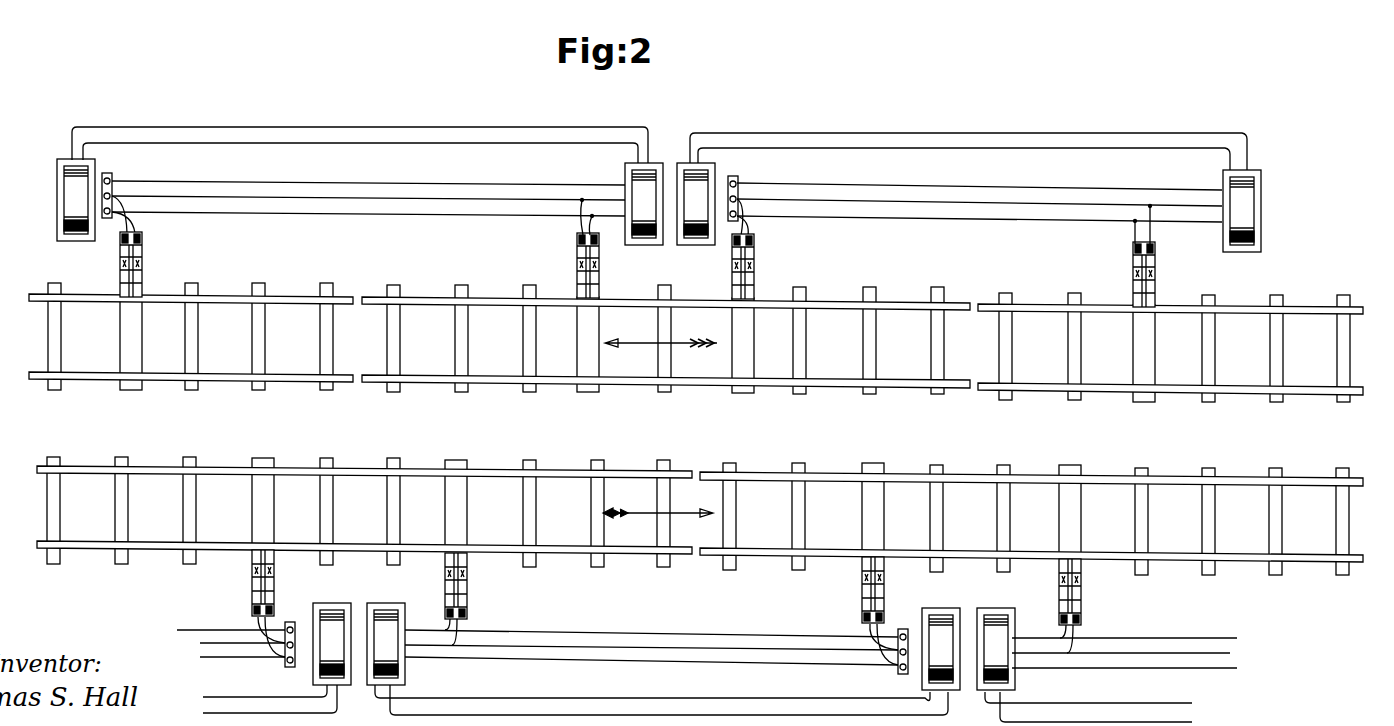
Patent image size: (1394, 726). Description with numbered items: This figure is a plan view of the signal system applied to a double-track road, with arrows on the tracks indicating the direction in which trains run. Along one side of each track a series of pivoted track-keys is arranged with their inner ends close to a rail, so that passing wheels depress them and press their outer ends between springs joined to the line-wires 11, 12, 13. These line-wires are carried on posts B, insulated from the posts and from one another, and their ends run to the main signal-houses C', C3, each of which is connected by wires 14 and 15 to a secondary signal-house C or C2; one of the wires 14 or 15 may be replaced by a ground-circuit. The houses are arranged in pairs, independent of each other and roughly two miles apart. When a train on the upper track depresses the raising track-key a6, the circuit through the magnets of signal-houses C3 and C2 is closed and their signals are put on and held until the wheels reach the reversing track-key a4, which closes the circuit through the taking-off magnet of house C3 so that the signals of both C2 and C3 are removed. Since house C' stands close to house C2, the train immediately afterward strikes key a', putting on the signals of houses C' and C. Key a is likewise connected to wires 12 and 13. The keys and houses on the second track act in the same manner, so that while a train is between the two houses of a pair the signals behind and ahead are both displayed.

The line-wire 11 is at (674, 421).
The line-wire 12 is at (671, 420).
The line-wire 13 is at (674, 420).
The wire 14 is at (656, 420).
The wire 15 is at (659, 420).
The post B is at (507, 415).
The secondary signal-house C is at (76, 200).
The signal-house C' is at (644, 204).
The secondary signal-house C2 is at (696, 204).
The signal-house C3 is at (1242, 211).
The track-key a is at (197, 424).
The track-key a' is at (577, 249).
The reversing track-key a4 is at (753, 266).
The raising track-key a6 is at (1154, 256).